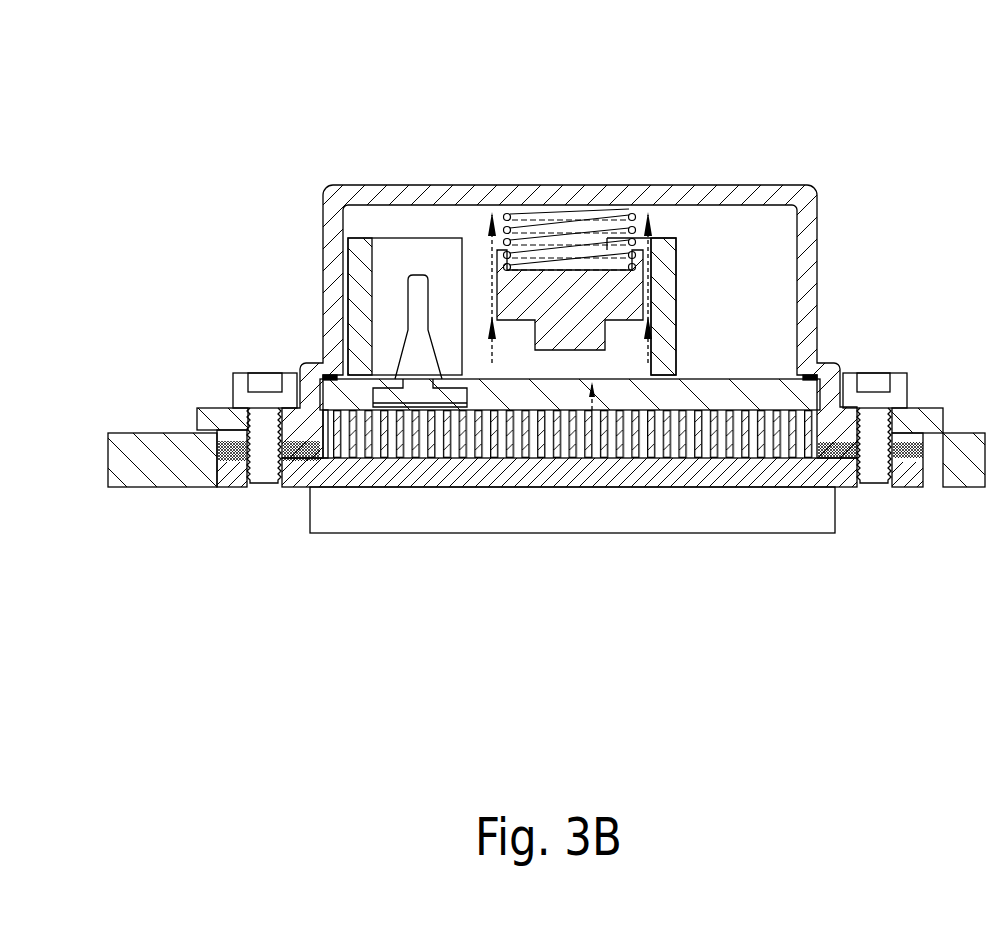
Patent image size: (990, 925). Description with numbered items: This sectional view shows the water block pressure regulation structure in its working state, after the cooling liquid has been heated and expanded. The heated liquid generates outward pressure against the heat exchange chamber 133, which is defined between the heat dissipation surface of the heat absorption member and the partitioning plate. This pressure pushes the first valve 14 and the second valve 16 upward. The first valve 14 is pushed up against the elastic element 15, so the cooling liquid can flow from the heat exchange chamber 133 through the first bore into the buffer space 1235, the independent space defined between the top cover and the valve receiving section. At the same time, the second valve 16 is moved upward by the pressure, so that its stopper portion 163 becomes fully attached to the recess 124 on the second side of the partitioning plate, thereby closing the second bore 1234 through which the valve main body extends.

The first valve 14 is at (607, 287).
The elastic element 15 is at (573, 207).
The second valve 16 is at (412, 334).
The recess 124 is at (465, 393).
The heat exchange chamber 133 is at (842, 393).
The stopper portion 163 is at (378, 403).
The second bore 1234 is at (432, 390).
The buffer space 1235 is at (752, 253).